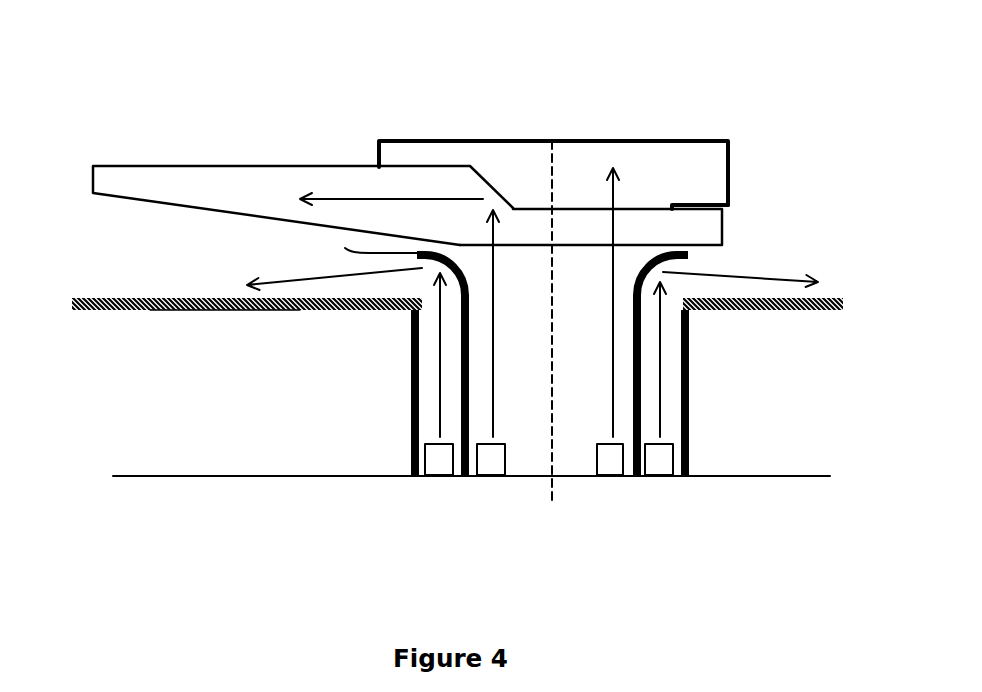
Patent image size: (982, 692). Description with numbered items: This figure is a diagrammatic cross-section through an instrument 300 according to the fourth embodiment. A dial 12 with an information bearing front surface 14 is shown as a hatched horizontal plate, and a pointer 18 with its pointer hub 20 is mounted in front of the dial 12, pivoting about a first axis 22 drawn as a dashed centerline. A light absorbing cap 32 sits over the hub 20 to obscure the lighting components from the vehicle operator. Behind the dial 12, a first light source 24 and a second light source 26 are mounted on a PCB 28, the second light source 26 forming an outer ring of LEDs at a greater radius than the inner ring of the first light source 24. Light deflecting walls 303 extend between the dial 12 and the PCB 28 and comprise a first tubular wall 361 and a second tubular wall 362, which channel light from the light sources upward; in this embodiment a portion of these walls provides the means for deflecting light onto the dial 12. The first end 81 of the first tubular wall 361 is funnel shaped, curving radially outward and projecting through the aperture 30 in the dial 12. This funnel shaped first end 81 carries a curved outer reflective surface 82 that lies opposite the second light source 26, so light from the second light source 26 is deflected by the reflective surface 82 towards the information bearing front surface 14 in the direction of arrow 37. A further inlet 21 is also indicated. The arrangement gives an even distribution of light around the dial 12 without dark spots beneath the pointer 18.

The instrument 300 is at (150, 58).
The needle 18 is at (205, 183).
The curved outer reflective surface 82 is at (412, 273).
The aperture 30 is at (516, 302).
The first axis 22 is at (573, 141).
The light absorbing cap 32 is at (728, 185).
The pointer hub 20 is at (733, 254).
The direction of light 37 is at (276, 280).
The first end 81 is at (345, 248).
The information bearing front surface 14 is at (98, 287).
The dial 12 is at (207, 308).
The light deflecting walls 303 is at (415, 384).
The first tubular wall 361 is at (638, 360).
The second tubular wall 362 is at (688, 405).
The first gas inlet 21 is at (435, 452).
The first light source 24 is at (493, 468).
The second light source 26 is at (662, 452).
The PCB 28 is at (305, 476).